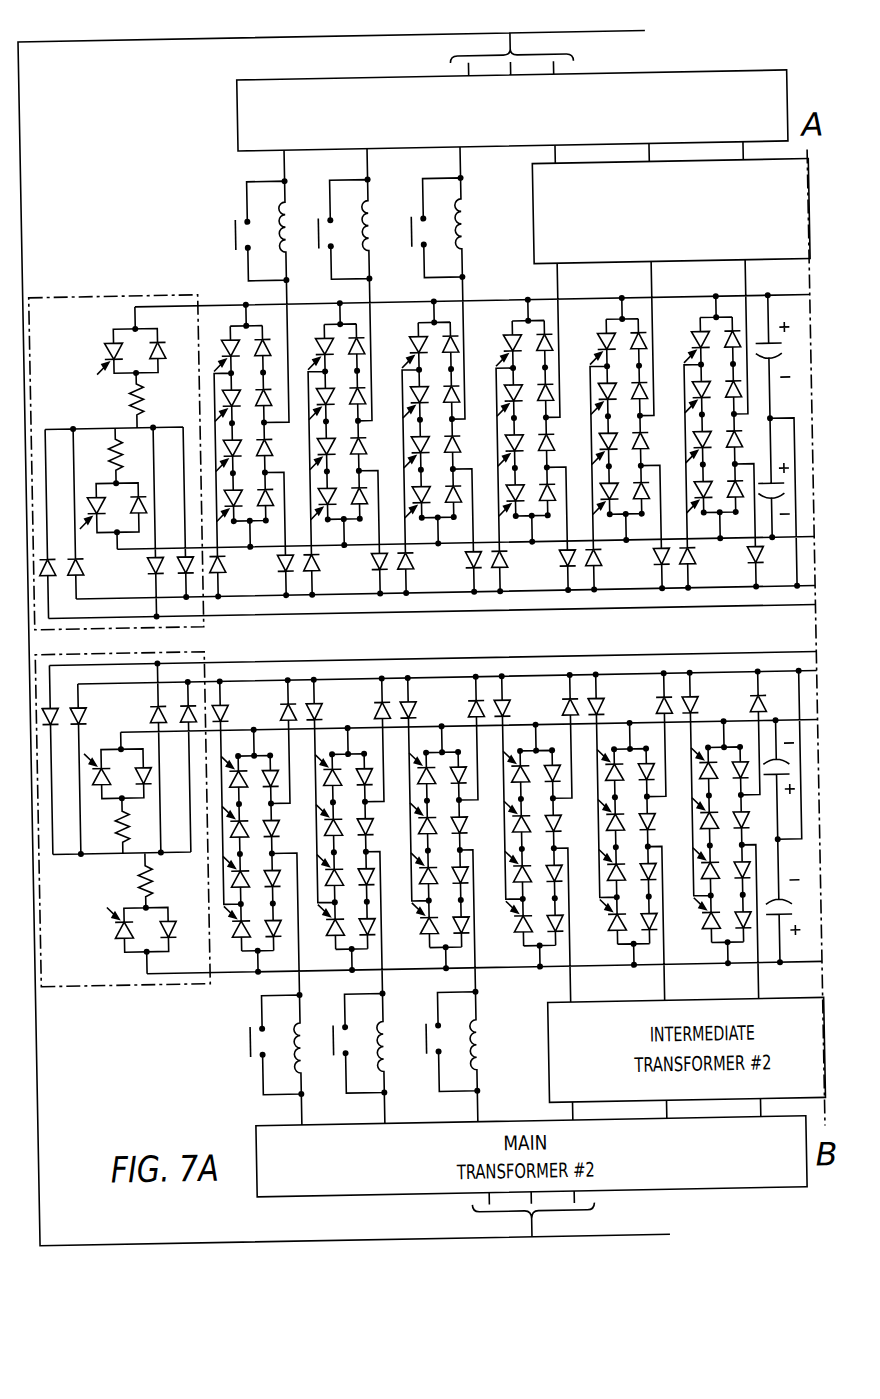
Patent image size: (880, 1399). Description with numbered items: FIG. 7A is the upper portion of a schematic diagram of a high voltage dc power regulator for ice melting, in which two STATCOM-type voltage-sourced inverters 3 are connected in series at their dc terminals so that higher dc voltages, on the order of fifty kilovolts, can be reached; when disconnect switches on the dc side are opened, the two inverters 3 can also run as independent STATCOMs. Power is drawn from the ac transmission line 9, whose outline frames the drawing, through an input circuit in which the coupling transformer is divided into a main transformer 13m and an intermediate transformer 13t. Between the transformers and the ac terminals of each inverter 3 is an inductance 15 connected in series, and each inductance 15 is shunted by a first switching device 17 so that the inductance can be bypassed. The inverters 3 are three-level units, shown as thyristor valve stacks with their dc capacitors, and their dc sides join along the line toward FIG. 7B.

The inverter 3 is at (552, 624).
The ac transmission line 9 is at (18, 1100).
The main transformer 13m is at (706, 84).
The intermediate transformer 13t is at (530, 224).
The inductance 15 is at (384, 249).
The first switching device 17 is at (227, 216).